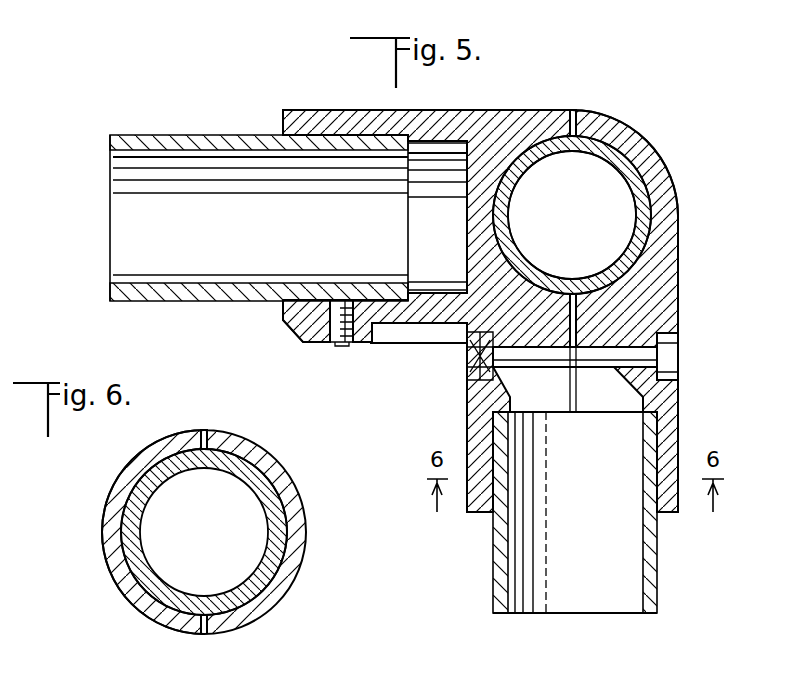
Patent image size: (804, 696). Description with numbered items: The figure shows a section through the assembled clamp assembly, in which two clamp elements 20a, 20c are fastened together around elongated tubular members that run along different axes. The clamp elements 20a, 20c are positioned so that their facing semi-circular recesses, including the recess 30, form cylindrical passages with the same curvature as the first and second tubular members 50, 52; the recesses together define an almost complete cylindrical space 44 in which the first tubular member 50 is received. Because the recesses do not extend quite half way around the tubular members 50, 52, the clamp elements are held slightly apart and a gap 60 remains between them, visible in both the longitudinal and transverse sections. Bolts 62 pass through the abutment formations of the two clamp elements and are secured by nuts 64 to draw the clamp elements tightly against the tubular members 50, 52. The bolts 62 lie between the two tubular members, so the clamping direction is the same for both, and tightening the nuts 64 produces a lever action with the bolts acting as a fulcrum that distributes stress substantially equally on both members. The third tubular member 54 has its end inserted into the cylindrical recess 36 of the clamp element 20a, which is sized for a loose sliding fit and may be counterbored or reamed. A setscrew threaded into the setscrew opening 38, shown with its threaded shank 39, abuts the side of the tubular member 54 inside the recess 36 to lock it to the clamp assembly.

In FIG. 5, the clamp element 20a is at (548, 108).
In FIG. 6, the clamp element 20a is at (108, 507).
In FIG. 5, the clamp element 20c is at (680, 232).
In FIG. 6, the clamp element 20c is at (305, 540).
In FIG. 5, the recess 30 is at (542, 513).
In FIG. 5, the cylindrical recess 36 is at (298, 257).
In FIG. 5, the threaded setscrew opening 38 is at (308, 346).
In FIG. 5, the set screw 39 is at (350, 348).
In FIG. 5, the cylindrical space 44 is at (600, 175).
In FIG. 5, the first elongated tubular member 50 is at (645, 197).
In FIG. 5, the second elongated tubular member 52 is at (655, 567).
In FIG. 6, the second elongated tubular member 52 is at (255, 580).
In FIG. 5, the third elongated tubular member 54 is at (173, 134).
In FIG. 5, the gap 60 is at (578, 110).
In FIG. 6, the gap 60 is at (201, 428).
In FIG. 5, the bolt 62 is at (665, 332).
In FIG. 5, the nut 64 is at (473, 365).